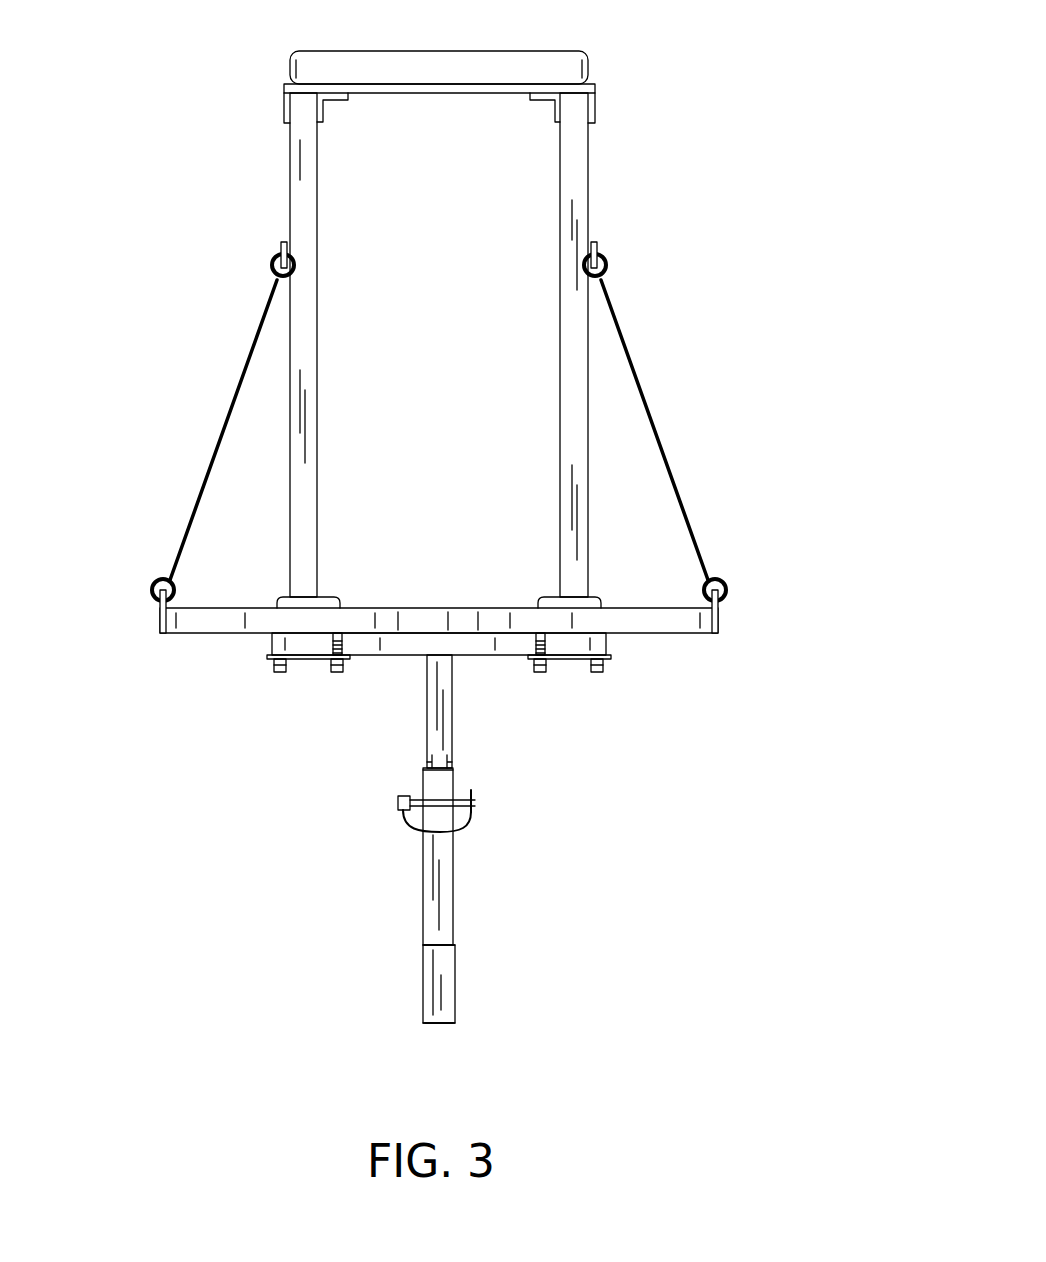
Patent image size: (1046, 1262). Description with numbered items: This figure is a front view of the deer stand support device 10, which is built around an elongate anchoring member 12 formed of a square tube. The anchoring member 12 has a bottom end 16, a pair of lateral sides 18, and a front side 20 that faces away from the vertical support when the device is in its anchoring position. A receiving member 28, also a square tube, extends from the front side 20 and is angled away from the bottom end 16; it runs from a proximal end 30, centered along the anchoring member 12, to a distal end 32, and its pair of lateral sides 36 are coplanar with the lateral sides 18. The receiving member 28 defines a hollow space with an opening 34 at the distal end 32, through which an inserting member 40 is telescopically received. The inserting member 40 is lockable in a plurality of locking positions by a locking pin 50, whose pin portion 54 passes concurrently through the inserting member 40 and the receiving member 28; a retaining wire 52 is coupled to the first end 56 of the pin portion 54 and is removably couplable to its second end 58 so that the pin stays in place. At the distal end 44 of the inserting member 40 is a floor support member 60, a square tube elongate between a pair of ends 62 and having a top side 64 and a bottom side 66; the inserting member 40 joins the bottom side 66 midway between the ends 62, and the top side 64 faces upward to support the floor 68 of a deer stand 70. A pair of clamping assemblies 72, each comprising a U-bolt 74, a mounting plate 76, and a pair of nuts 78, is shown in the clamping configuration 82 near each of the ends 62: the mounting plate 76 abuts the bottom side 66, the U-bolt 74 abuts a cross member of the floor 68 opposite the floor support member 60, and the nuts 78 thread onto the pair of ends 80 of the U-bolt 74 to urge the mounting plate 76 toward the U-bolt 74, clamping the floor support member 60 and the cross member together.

The deer stand support device 10 is at (690, 920).
The anchoring member 12 is at (441, 998).
The bottom end of the anchoring member 16 is at (440, 1025).
The lateral sides of the anchoring member 18 is at (423, 970).
The front side of the anchoring member 20 is at (437, 1015).
The receiving member 28 is at (453, 893).
The proximal end of the receiving member 30 is at (423, 921).
The distal end of the receiving member 32 is at (455, 762).
The opening 34 is at (427, 758).
The lateral sides of the receiving member 36 is at (423, 865).
The inserting member 40 is at (440, 716).
The distal end of the inserting member 44 is at (448, 620).
The locking pin 50 is at (495, 830).
The retaining wire 52 is at (410, 818).
The pin portion 54 is at (398, 802).
The first end of the pin portion 56 is at (403, 810).
The second end of the pin portion 58 is at (478, 805).
The floor support member 60 is at (478, 620).
The ends of the floor support member 62 is at (272, 641).
The top side of the floor support member 64 is at (398, 620).
The bottom side of the floor support member 66 is at (388, 657).
The floor 68 is at (660, 615).
The deer stand 70 is at (655, 100).
The clamping assemblies 72 is at (330, 578).
The U-bolt 74 is at (280, 601).
The mounting plate 76 is at (318, 658).
The nuts 78 is at (276, 661).
The ends of the U-bolt 80 is at (278, 673).
The clamping configuration 82 is at (775, 580).